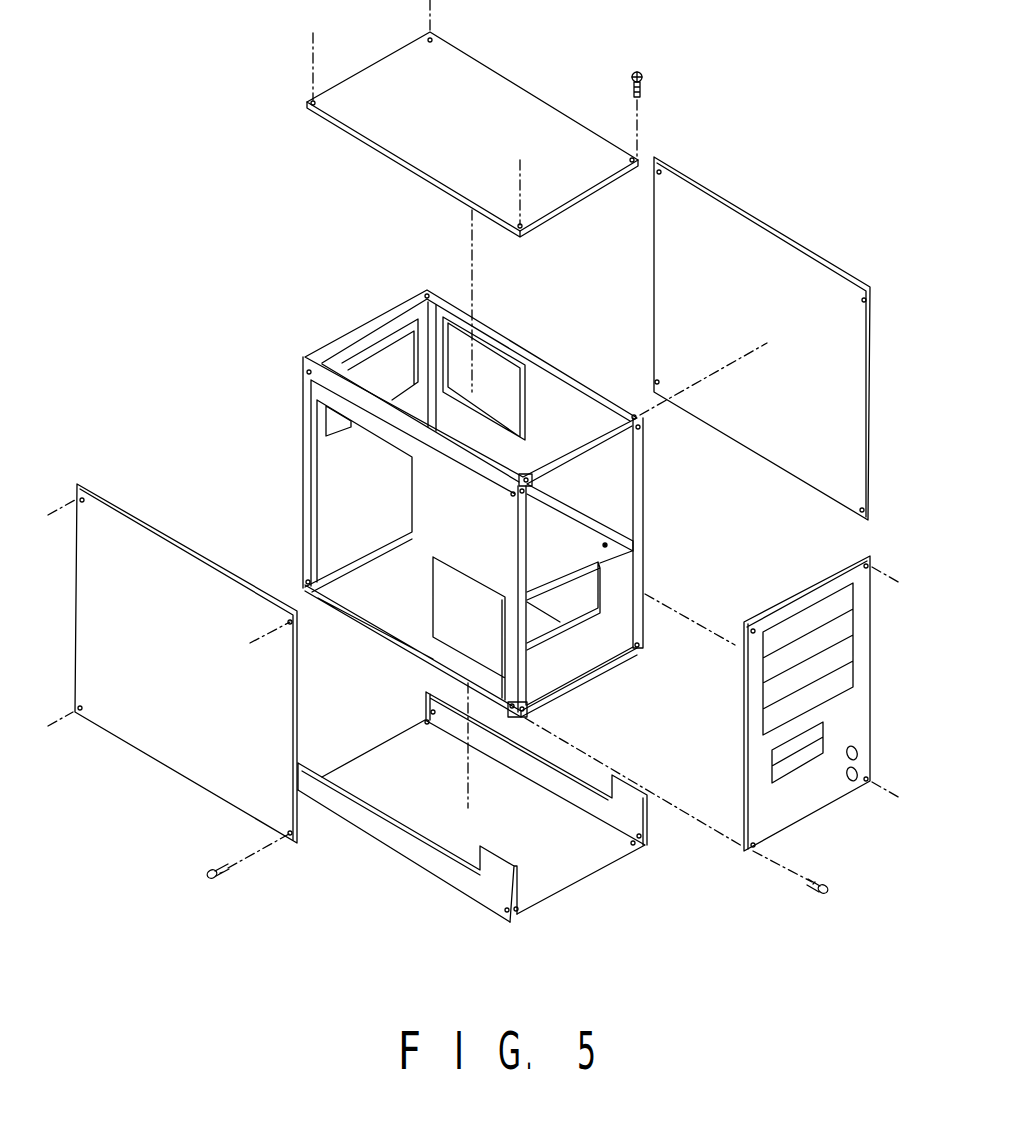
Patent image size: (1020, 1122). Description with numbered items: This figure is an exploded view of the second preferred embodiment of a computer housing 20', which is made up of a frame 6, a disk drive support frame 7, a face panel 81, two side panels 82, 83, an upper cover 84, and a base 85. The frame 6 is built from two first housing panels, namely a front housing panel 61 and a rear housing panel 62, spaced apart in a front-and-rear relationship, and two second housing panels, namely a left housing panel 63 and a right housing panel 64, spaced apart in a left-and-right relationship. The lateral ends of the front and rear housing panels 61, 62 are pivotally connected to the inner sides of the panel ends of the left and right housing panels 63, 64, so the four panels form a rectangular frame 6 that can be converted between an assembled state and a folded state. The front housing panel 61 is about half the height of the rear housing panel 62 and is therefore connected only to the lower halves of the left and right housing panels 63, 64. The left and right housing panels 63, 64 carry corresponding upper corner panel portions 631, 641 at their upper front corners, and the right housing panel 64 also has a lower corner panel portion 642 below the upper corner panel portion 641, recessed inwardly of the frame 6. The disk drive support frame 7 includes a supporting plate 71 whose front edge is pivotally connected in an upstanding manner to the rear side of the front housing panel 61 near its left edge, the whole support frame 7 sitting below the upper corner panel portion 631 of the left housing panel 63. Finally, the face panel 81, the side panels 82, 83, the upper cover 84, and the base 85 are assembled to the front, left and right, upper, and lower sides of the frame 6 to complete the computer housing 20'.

The computer housing 20' is at (474, 464).
The frame 6 is at (526, 334).
The front housing panel 61 is at (623, 570).
The rear housing panel 62 is at (377, 325).
The left housing panel 63 is at (641, 452).
The upper corner panel portion 631 is at (580, 413).
The right housing panel 64 is at (367, 403).
The upper corner panel portion 641 is at (420, 491).
The lower corner panel portion 642 is at (447, 607).
The disk drive support frame 7 is at (588, 518).
The supporting plate 71 is at (565, 553).
The face panel 81 is at (798, 802).
The side panel 82 is at (778, 250).
The side panel 83 is at (177, 743).
The upper cover 84 is at (383, 137).
The base 85 is at (442, 828).